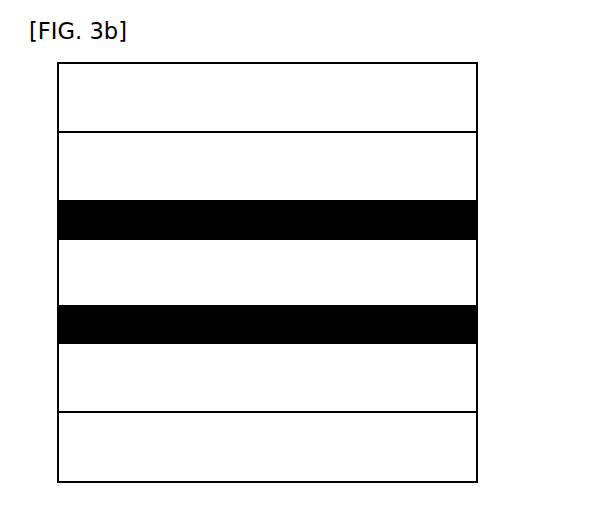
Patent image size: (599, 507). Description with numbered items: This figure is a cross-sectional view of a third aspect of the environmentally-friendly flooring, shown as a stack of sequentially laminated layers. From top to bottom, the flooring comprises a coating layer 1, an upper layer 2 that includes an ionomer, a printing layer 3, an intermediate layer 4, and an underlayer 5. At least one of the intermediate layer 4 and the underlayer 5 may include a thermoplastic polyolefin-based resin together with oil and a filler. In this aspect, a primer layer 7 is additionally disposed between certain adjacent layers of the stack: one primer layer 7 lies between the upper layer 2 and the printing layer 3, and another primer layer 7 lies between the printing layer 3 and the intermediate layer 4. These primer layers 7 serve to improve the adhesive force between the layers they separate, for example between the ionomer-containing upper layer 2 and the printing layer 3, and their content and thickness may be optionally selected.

The coating layer 1 is at (477, 97).
The upper layer 2 is at (477, 167).
The printing layer 3 is at (477, 270).
The intermediate layer 4 is at (477, 375).
The underlayer 5 is at (477, 445).
The primer layer 7 is at (477, 218).